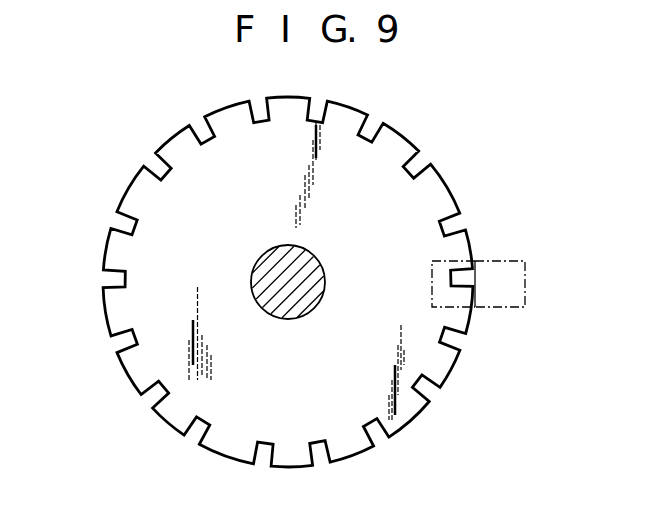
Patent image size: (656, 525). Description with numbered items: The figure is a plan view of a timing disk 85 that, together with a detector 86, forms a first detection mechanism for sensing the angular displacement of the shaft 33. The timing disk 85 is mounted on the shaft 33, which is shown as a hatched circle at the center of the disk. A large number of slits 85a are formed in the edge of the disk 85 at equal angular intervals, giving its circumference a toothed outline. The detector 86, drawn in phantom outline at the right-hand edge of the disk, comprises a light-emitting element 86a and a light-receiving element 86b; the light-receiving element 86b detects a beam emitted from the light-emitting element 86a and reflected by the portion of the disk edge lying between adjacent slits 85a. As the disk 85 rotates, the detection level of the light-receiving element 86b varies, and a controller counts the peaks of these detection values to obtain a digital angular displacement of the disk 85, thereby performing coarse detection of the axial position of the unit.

The timing disk 85 is at (387, 165).
The slits 85a is at (144, 163).
The shaft 33 is at (307, 262).
The detector 86 is at (484, 255).
The light-emitting element 86a is at (432, 278).
The light-receiving element 86b is at (526, 288).